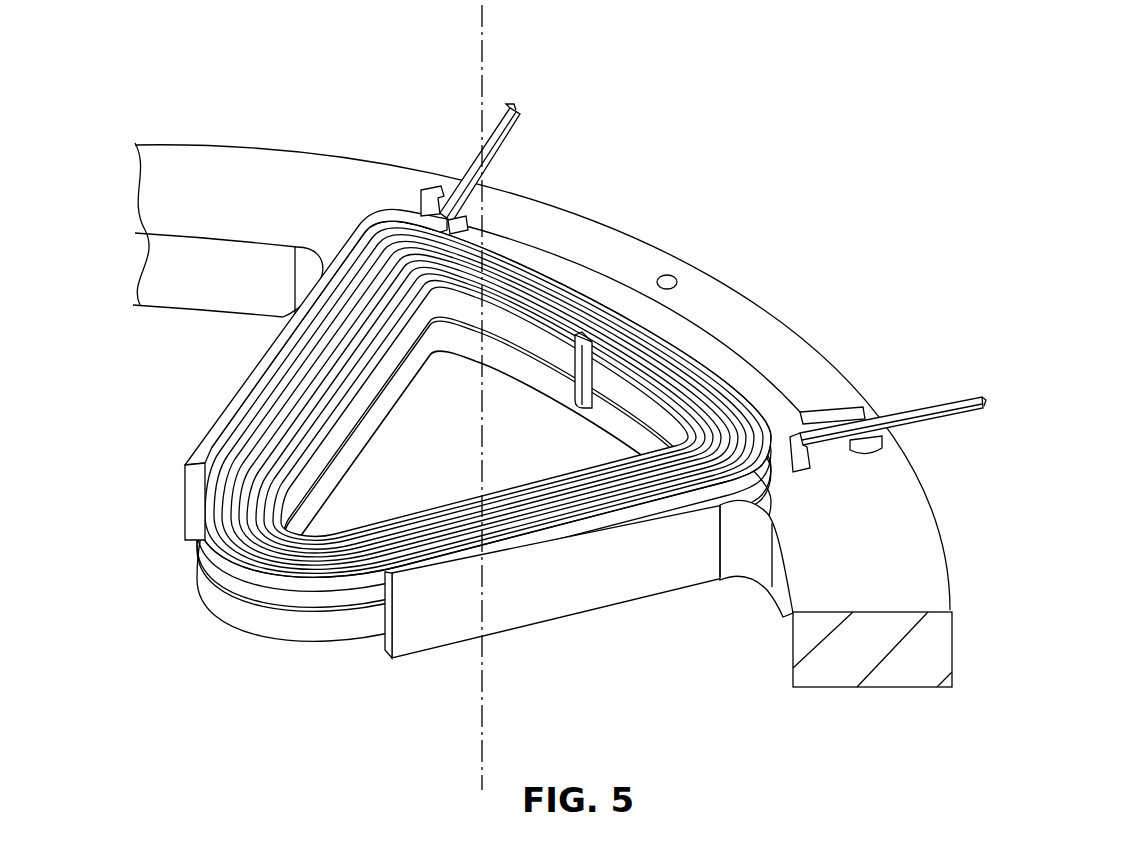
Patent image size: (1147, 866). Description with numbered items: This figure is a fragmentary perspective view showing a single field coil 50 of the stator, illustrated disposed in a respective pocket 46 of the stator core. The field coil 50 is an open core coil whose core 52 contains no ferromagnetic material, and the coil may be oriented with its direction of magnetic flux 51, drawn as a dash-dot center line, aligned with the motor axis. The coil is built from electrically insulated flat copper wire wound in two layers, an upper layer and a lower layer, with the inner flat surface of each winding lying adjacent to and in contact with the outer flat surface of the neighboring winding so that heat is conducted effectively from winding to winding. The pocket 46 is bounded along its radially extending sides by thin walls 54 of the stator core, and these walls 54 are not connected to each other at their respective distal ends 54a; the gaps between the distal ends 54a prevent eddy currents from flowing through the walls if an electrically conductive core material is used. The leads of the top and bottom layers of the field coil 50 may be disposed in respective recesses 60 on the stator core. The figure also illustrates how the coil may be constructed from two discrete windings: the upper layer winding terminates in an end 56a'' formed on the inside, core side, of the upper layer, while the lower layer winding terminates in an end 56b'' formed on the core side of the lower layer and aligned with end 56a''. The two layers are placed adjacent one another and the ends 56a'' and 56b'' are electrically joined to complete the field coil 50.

The pocket 46 is at (593, 280).
The field coil 50 is at (520, 361).
The direction of magnetic flux 51 is at (478, 34).
The core 52 is at (484, 458).
The wall 54 is at (394, 474).
The distal end 54a is at (187, 496).
The end of winding of upper layer 56a'' is at (548, 399).
The end of winding of lower layer 56b'' is at (678, 318).
The recess 60 is at (447, 185).